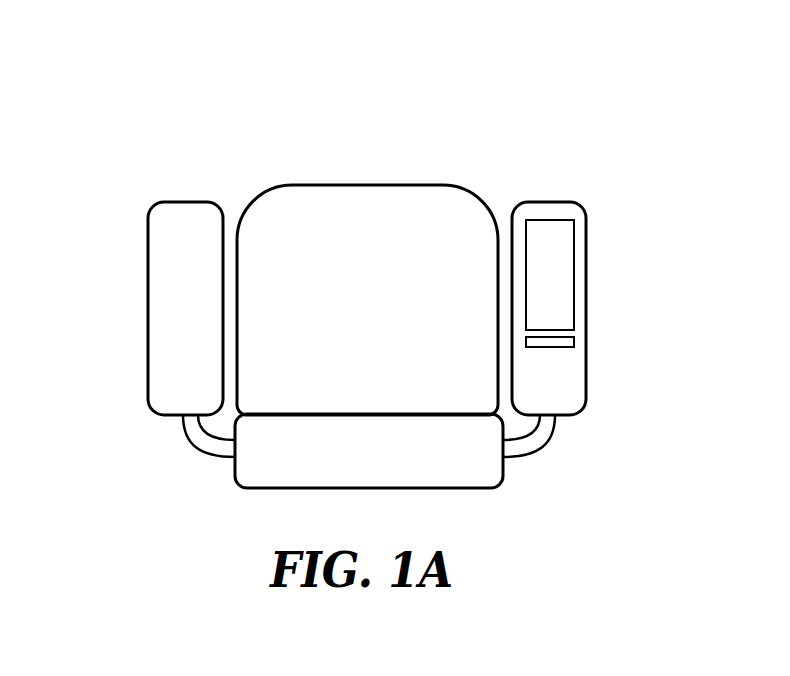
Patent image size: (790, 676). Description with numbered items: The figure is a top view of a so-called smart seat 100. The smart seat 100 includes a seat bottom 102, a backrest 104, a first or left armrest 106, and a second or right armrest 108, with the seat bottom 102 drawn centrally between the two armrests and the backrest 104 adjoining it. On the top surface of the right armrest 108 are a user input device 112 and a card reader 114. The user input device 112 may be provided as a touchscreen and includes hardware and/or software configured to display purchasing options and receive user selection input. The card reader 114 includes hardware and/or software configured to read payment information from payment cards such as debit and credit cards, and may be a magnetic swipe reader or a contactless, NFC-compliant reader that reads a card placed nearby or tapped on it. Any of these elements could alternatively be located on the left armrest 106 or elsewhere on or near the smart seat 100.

The smart seat 100 is at (184, 118).
The seat bottom 102 is at (384, 185).
The backrest 104 is at (503, 480).
The first armrest 106 is at (148, 277).
The second armrest 108 is at (587, 395).
The user input device 112 is at (574, 258).
The card reader 114 is at (574, 343).